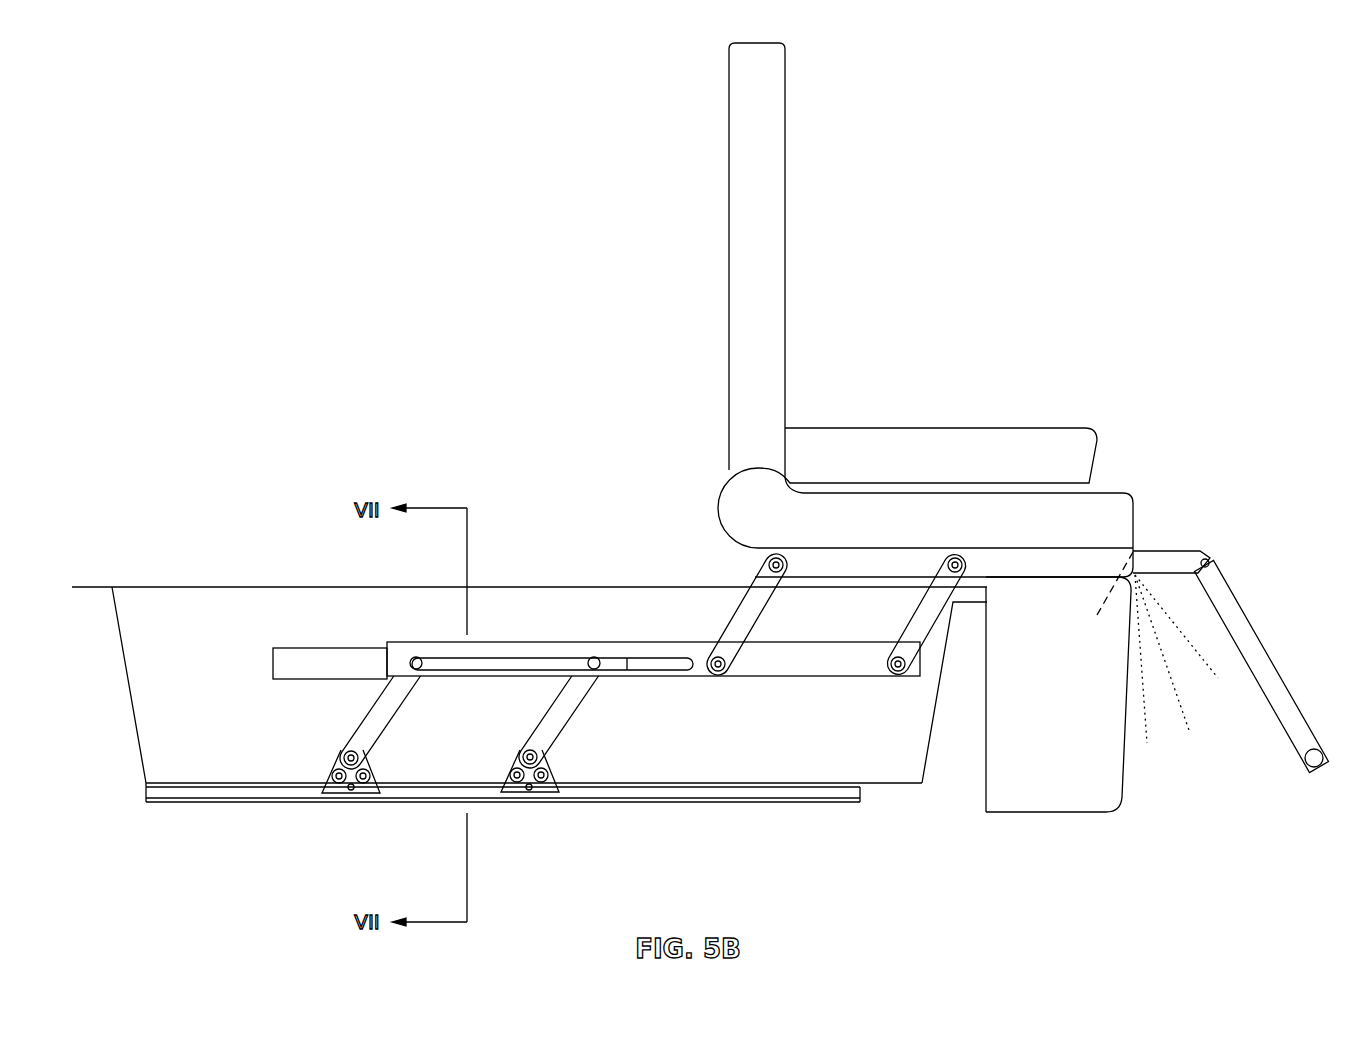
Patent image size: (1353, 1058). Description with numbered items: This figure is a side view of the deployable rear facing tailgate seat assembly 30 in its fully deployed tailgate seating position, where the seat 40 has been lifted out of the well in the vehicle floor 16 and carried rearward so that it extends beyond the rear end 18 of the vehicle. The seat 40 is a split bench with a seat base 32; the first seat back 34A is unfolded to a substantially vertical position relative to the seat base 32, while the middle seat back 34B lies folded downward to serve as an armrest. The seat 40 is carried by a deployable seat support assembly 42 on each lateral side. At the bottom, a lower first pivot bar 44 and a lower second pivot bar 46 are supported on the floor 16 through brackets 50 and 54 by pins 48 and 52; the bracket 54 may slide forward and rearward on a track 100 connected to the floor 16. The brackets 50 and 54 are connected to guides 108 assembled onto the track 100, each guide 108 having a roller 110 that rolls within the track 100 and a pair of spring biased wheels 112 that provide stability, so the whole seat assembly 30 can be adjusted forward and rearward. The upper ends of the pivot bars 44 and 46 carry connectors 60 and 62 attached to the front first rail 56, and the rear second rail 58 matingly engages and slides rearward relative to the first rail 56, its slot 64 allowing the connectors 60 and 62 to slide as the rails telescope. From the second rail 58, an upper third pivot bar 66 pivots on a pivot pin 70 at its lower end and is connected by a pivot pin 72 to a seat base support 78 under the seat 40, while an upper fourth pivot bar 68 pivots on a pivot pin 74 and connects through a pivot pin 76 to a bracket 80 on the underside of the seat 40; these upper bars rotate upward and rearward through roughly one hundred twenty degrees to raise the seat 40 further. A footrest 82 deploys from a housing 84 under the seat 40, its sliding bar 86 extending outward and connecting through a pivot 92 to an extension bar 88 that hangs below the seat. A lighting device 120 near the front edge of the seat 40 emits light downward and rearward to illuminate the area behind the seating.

The floor 16 is at (877, 783).
The rear end 18 is at (1032, 786).
The deployable rear facing tailgate seat assembly 30 is at (1222, 466).
The seat base 32 is at (1062, 505).
The first seat back 34A is at (770, 203).
The middle seat back 34B is at (928, 428).
The seat 40 is at (1103, 428).
The deployable seat support assembly 42 is at (637, 600).
The lower first pivot bar 44 is at (373, 727).
The lower second pivot bar 46 is at (553, 728).
The pin 48 is at (352, 757).
The bracket 50 is at (325, 794).
The pin 52 is at (532, 758).
The bracket 54 is at (512, 788).
The front first rail 56 is at (328, 662).
The rear second rail 58 is at (542, 650).
The connector 60 is at (417, 660).
The connector 62 is at (597, 658).
The slot 64 is at (483, 662).
The upper third pivot bar 66 is at (748, 613).
The upper fourth pivot bar 68 is at (923, 615).
The pivot pin 70 is at (717, 672).
The pivot pin 72 is at (778, 567).
The pivot pin 74 is at (898, 673).
The pivot pin 76 is at (960, 563).
The seat base support 78 is at (797, 548).
The bracket 80 is at (1003, 545).
The footrest 82 is at (1213, 532).
The housing 84 is at (1105, 560).
The sliding bar 86 is at (1160, 563).
The extension bar 88 is at (1257, 660).
The pivot 92 is at (1215, 557).
The track 100 is at (753, 792).
The guide 108 is at (318, 760).
The roller 110 is at (350, 798).
The spring biased wheel 112 is at (540, 772).
The lighting device 120 is at (1144, 647).